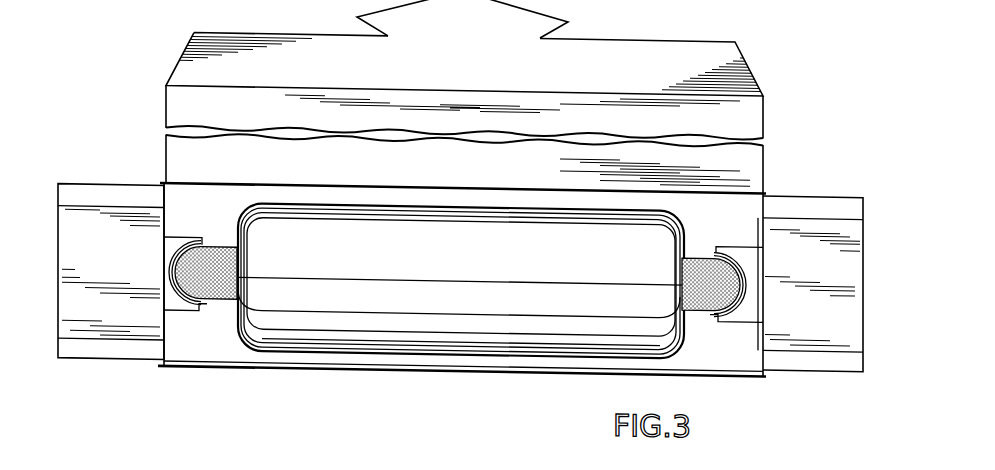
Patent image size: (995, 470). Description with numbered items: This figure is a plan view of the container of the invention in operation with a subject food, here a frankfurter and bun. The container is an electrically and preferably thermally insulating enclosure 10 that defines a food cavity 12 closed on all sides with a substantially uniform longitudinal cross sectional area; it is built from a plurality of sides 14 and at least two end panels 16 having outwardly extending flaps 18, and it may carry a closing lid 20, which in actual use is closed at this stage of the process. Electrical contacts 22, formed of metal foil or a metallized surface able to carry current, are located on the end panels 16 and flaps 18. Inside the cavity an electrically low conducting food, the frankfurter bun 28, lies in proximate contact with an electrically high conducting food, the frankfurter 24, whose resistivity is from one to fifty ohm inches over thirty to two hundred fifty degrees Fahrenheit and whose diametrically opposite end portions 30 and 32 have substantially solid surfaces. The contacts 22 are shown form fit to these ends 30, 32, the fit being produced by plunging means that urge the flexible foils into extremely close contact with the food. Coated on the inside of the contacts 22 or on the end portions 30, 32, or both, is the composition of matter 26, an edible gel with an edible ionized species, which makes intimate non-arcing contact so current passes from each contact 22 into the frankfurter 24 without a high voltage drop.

The enclosure 10 is at (311, 372).
The food cavity 12 is at (219, 339).
The sides 14 is at (513, 366).
The end panels 16 is at (157, 362).
The outwardly extending flaps 18 is at (76, 192).
The closing lid 20 is at (182, 100).
The electrical contacts 22 is at (65, 258).
The electrically high conducting foodstuff 24 is at (225, 270).
The composition of matter 26 is at (180, 310).
The frankfurter bun 28 is at (454, 256).
The end portion 30 is at (692, 299).
The end portion 32 is at (223, 246).